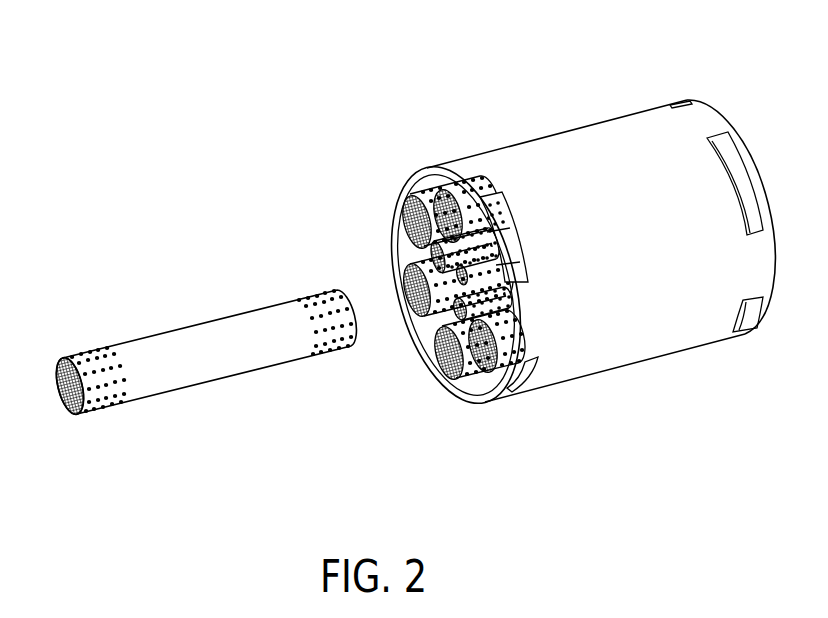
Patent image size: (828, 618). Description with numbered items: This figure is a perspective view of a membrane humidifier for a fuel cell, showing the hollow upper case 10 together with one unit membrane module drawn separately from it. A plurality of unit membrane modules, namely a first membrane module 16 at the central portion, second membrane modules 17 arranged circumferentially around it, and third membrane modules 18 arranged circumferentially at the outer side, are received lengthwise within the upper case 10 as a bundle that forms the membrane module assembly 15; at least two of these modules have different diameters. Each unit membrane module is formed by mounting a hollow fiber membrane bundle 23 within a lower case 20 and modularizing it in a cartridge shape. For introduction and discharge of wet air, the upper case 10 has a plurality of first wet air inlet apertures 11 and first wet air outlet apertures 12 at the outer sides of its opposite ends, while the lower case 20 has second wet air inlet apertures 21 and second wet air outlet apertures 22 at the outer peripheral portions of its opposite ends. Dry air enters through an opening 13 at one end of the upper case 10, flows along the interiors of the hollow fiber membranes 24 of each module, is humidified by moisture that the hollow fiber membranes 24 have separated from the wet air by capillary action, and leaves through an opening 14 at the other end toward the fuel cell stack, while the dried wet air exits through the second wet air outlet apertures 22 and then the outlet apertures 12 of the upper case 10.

The upper case 10 is at (611, 114).
The first wet air inlet apertures 11 is at (530, 262).
The first wet air outlet apertures 12 is at (738, 170).
The opening 13 is at (764, 182).
The opening 14 is at (416, 172).
The membrane module assembly 15 is at (396, 235).
The first membrane module 16 is at (420, 300).
The second membrane modules 17 is at (488, 303).
The third membrane modules 18 is at (513, 335).
The lower case 20 is at (233, 318).
The second wet air inlet apertures 21 is at (111, 370).
The second wet air outlet apertures 22 is at (327, 292).
The hollow fiber membrane bundle 23 is at (65, 417).
The hollow fiber membranes 24 is at (60, 374).